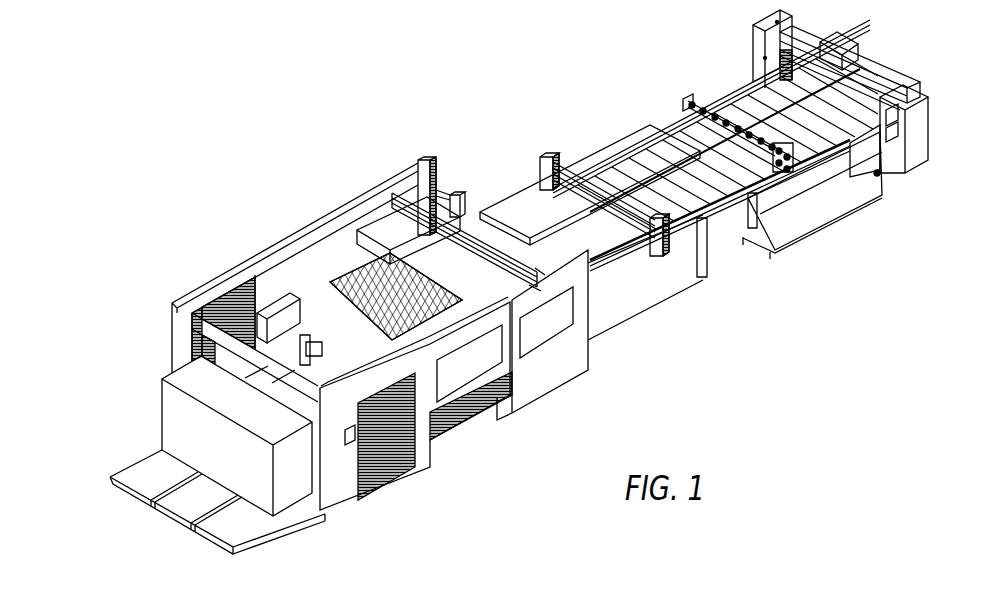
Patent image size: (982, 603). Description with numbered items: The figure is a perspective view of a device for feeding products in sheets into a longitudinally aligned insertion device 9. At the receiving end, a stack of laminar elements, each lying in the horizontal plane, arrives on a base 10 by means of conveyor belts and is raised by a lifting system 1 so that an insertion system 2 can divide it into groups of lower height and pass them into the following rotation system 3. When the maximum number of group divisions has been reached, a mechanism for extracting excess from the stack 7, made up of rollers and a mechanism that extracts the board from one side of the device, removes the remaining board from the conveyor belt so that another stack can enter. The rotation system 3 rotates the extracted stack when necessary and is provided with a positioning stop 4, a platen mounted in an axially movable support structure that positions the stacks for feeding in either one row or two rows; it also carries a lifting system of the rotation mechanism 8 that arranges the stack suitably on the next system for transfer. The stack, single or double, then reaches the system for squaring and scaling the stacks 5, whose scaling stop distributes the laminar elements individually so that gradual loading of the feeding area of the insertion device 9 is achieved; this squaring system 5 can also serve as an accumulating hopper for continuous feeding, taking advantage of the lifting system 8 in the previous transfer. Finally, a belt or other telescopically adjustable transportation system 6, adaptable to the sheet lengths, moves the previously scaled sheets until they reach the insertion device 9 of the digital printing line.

The lifting system 1 is at (275, 388).
The insertion system 2 is at (305, 358).
The rotation system 3 is at (357, 243).
The positioning stop 4 is at (440, 222).
The system for squaring and scaling the stacks 5 is at (580, 167).
The telescopically-adjustable transportation system 6 is at (680, 104).
The mechanism for extracting excess from the stack 7 is at (450, 437).
The lifting system of the rotation mechanism 8 is at (418, 158).
The insertion device 9 is at (885, 168).
The base 10 is at (163, 472).